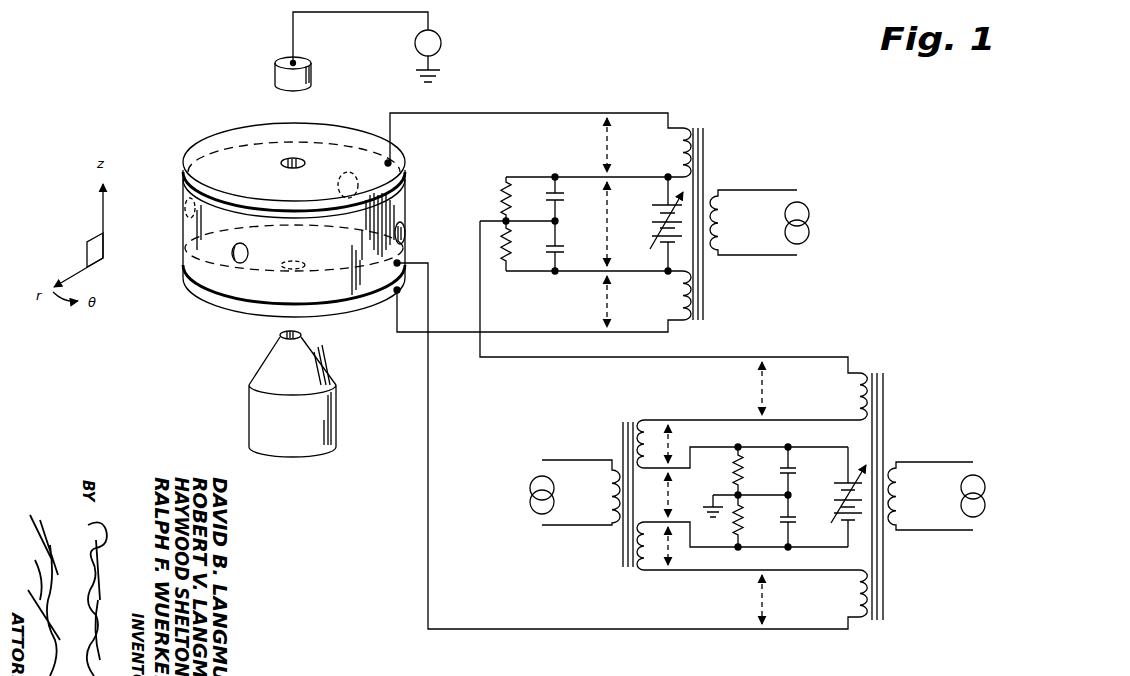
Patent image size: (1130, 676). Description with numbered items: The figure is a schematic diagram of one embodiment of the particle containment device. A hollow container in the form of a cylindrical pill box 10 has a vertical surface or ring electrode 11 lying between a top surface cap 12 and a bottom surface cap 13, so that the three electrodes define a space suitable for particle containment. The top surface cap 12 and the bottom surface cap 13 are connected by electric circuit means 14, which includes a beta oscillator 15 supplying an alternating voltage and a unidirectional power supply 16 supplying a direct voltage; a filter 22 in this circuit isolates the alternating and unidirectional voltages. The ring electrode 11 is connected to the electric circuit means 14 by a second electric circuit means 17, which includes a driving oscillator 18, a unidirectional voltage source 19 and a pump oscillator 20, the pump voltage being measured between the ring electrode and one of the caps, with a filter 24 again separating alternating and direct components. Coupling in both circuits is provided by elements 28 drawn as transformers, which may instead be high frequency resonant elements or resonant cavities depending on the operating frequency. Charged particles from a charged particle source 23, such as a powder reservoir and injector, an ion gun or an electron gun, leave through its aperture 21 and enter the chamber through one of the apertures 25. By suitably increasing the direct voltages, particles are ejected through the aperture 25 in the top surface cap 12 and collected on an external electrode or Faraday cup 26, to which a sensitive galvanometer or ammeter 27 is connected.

The cylindrical pill box 10 is at (175, 111).
The ring electrode 11 is at (183, 214).
The top surface cap 12 is at (248, 127).
The bottom surface cap 13 is at (193, 294).
The electric circuit means 14 is at (773, 120).
The beta oscillator 15 is at (800, 202).
The unidirectional power supply 16 is at (660, 200).
The electric circuit means 17 is at (928, 352).
The driving oscillator 18 is at (975, 475).
The unidirectional voltage source 19 is at (844, 476).
The pump oscillator 20 is at (537, 465).
The aperture 21 is at (301, 334).
The filter 22 is at (541, 206).
The charged particle source 23 is at (337, 415).
The filter 24 is at (772, 478).
The apertures 25 is at (300, 160).
The Faraday cup 26 is at (303, 59).
The ammeter 27 is at (438, 37).
The transformers 28 is at (706, 157).